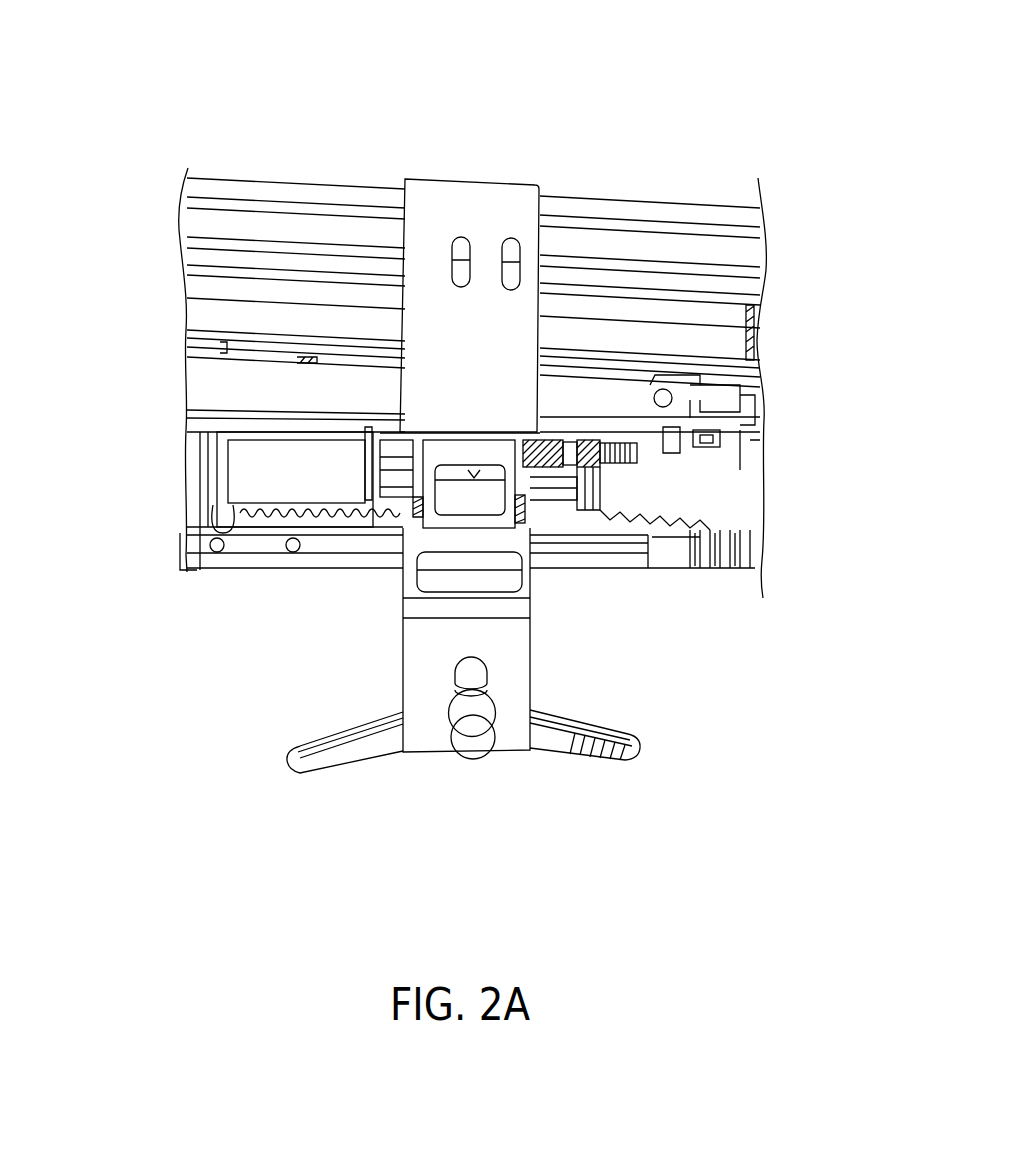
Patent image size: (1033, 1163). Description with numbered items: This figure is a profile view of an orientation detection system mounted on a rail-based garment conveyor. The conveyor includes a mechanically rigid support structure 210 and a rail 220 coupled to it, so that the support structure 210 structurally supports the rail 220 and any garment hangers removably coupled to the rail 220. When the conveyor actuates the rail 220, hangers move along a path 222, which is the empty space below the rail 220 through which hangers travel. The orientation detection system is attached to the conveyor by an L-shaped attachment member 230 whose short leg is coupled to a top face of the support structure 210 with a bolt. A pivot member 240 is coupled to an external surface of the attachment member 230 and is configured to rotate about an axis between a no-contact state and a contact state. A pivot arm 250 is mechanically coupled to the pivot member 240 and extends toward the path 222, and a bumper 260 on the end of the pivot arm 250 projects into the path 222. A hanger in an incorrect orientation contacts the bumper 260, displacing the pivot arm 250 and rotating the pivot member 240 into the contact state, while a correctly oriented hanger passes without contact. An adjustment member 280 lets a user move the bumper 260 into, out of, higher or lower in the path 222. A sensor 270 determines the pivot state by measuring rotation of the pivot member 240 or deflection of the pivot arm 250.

The support structure 210 is at (152, 144).
The rail 220 is at (256, 558).
The path 222 is at (308, 681).
The attachment member 230 is at (519, 210).
The pivot member 240 is at (634, 452).
The pivot arm 250 is at (528, 638).
The bumper 260 is at (312, 775).
The sensor 270 is at (406, 525).
The adjustment member 280 is at (483, 744).